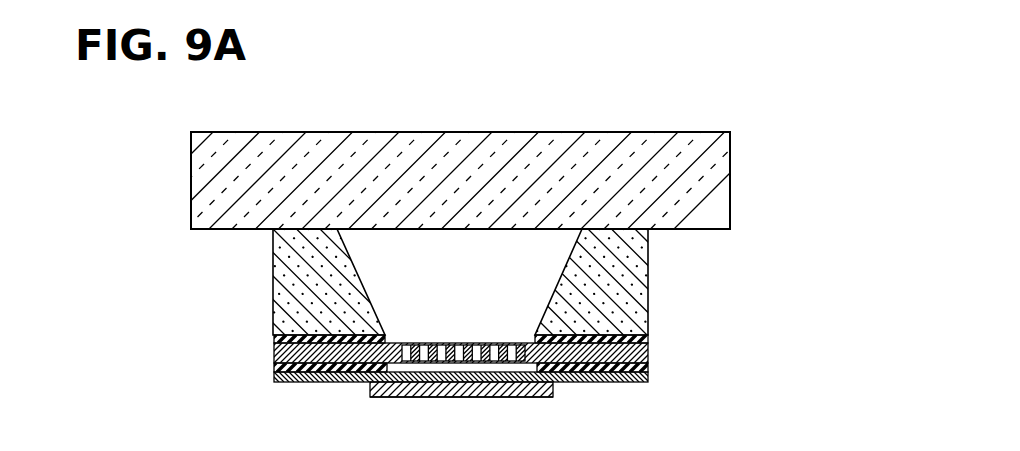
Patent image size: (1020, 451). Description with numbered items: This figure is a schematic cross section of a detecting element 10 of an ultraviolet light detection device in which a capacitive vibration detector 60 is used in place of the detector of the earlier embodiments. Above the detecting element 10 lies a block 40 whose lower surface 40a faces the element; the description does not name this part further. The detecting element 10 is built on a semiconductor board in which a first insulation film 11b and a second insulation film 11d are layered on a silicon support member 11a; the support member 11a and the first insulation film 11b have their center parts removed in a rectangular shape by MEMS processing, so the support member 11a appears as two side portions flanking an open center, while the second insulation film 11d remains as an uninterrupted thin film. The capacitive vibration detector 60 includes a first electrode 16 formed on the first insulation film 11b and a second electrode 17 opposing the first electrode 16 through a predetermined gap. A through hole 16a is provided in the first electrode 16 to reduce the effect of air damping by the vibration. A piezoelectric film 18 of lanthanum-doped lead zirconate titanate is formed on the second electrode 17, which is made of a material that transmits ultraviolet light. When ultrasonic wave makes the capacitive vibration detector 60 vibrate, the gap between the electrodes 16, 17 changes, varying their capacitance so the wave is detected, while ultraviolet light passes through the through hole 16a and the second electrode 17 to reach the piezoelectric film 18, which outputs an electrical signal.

The cover / lid member 40 is at (328, 148).
The lower surface of cover 40a is at (247, 232).
The detecting element 10 is at (460, 340).
The support member 11a is at (632, 272).
The first insulation film 11b is at (631, 336).
The first electrode 16 is at (638, 357).
The through hole 16a is at (441, 344).
The second insulation film 11d is at (638, 368).
The second electrode 17 is at (634, 381).
The piezoelectric film 18 is at (547, 398).
The capacitive vibration detector 60 is at (461, 400).